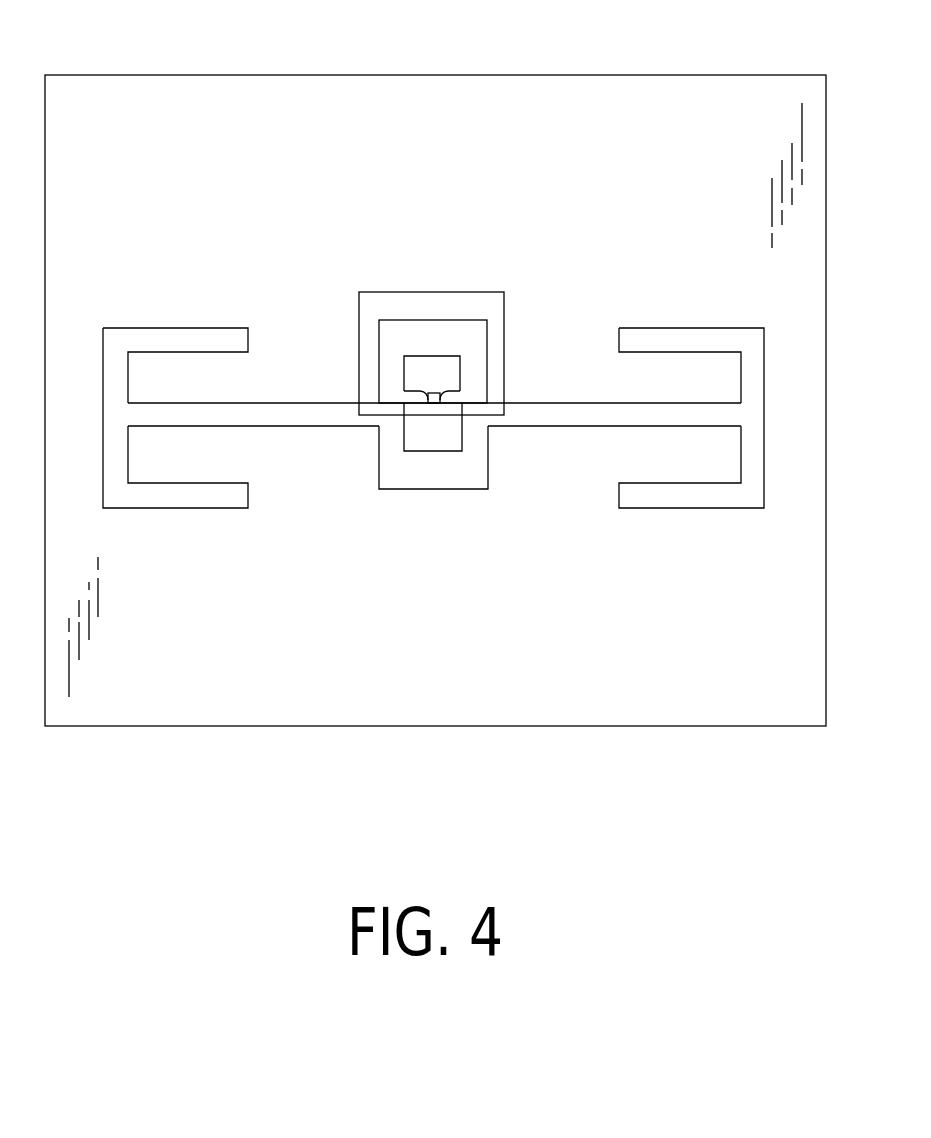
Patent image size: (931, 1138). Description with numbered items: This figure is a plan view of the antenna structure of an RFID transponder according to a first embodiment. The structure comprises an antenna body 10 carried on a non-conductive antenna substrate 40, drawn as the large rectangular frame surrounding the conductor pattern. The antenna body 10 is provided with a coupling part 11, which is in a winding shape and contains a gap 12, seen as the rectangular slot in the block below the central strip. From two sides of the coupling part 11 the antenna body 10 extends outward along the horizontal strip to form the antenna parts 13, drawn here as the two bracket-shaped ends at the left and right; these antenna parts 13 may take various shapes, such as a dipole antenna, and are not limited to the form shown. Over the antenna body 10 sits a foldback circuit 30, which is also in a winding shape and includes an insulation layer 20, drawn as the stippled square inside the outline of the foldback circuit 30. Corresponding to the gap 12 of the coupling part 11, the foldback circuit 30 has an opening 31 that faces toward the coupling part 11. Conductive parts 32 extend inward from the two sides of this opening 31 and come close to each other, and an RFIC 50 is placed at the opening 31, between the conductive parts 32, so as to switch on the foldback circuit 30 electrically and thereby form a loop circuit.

The antenna substrate 40 is at (535, 143).
The antenna parts 13 is at (165, 328).
The antenna body 10 is at (280, 403).
The foldback circuit 30 is at (462, 325).
The insulation layer 20 is at (430, 305).
The opening 31 is at (433, 377).
The conductive parts 32 is at (412, 390).
The RFIC 50 is at (435, 397).
The coupling part 11 is at (476, 470).
The gap 12 is at (423, 430).